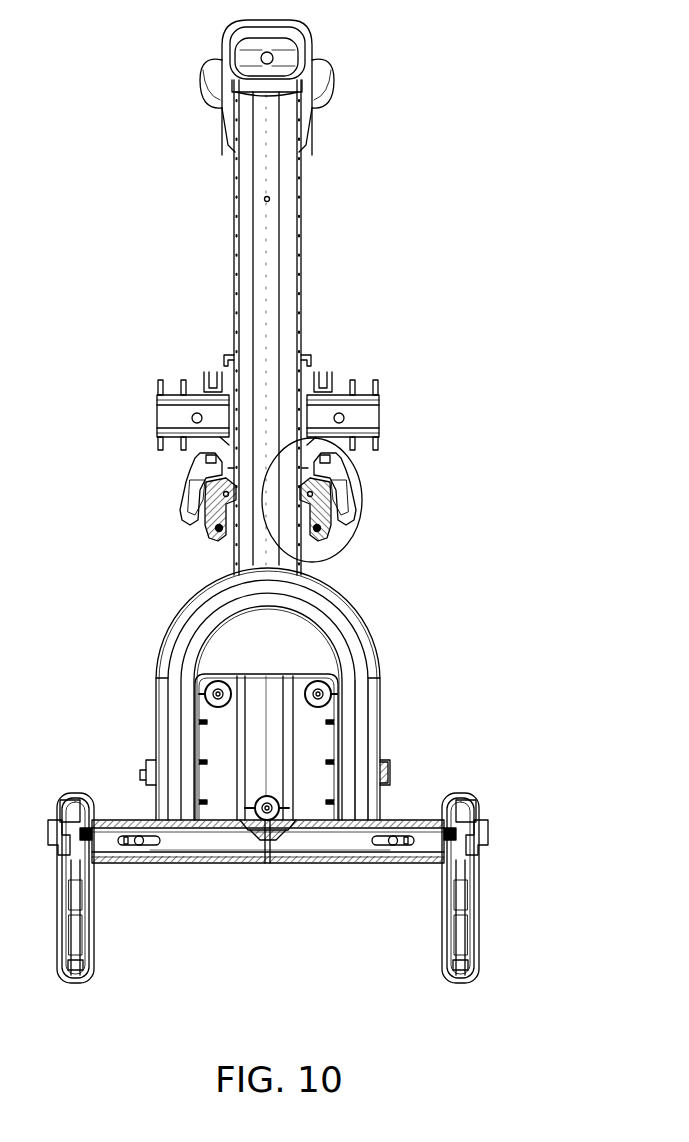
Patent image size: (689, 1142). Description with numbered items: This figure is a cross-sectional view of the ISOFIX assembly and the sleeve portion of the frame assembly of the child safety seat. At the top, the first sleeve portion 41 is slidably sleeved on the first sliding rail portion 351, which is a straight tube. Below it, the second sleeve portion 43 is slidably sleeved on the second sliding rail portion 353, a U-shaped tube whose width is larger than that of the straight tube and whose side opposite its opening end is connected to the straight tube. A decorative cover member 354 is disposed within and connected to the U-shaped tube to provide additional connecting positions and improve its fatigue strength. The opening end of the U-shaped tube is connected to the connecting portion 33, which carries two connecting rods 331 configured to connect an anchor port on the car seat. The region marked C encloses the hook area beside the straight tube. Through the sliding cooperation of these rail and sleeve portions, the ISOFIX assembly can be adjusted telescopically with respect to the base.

The first sleeve portion 41 is at (303, 238).
The first sliding rail portion 351 is at (263, 305).
The detail region C (clamp) C is at (344, 539).
The second sleeve portion 43 is at (155, 661).
The second sliding rail portion 353 is at (358, 712).
The decorative cover member 354 is at (313, 783).
The connecting portion 33 is at (411, 880).
The connecting rod 331 is at (460, 905).